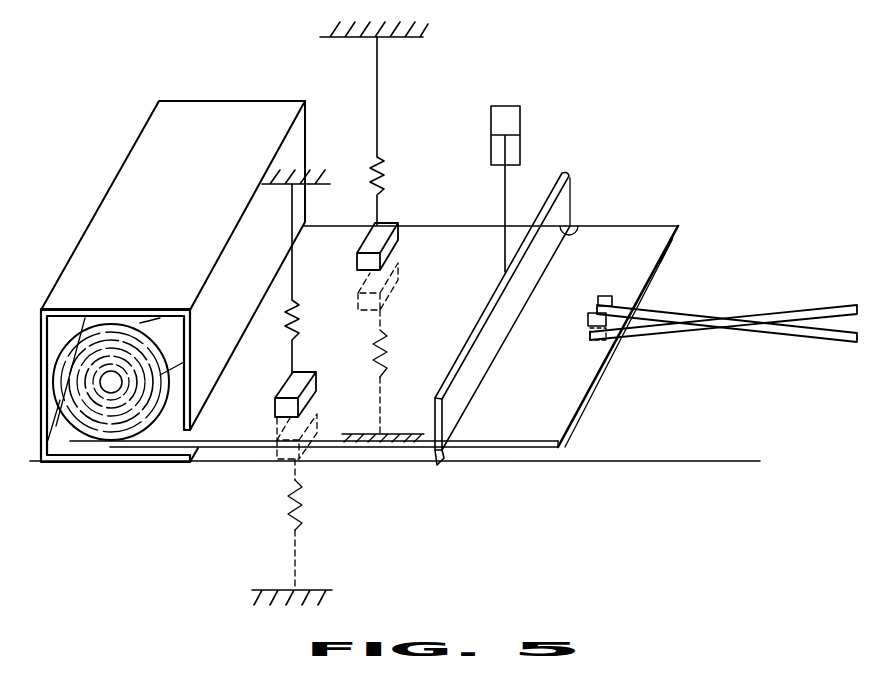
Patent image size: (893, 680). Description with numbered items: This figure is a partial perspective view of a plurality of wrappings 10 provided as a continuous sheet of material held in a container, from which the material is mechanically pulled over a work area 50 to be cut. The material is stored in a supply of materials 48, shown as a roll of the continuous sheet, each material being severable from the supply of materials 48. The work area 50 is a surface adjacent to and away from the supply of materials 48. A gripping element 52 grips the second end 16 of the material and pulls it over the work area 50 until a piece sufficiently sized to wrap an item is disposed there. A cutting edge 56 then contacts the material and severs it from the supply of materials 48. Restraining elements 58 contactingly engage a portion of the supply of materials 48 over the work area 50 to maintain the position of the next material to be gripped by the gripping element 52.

The wrapping 10 is at (607, 225).
The second end 16 is at (674, 240).
The supply of materials 48 is at (73, 441).
The work area 50 is at (512, 463).
The gripping element 52 is at (618, 296).
The cutting edge 56 is at (580, 225).
The restraining elements 58 is at (388, 222).